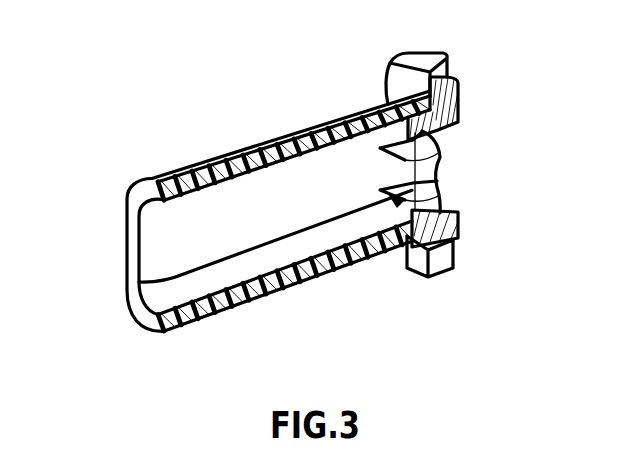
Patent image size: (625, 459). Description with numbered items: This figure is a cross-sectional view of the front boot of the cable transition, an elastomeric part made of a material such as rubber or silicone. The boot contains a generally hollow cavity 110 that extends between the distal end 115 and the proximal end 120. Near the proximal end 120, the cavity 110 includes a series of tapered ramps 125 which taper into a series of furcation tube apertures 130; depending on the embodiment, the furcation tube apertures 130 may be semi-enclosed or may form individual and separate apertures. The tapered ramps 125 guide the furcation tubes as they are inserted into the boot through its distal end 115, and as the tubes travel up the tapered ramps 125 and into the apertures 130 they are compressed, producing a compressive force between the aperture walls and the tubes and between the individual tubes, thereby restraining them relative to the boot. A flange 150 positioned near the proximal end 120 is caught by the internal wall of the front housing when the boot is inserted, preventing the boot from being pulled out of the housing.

The hollow cavity 110 is at (174, 282).
The distal end 115 is at (119, 191).
The proximal end 120 is at (463, 191).
The tapered ramps 125 is at (452, 238).
The furcation tube apertures 130 is at (440, 163).
The flange 150 is at (385, 72).